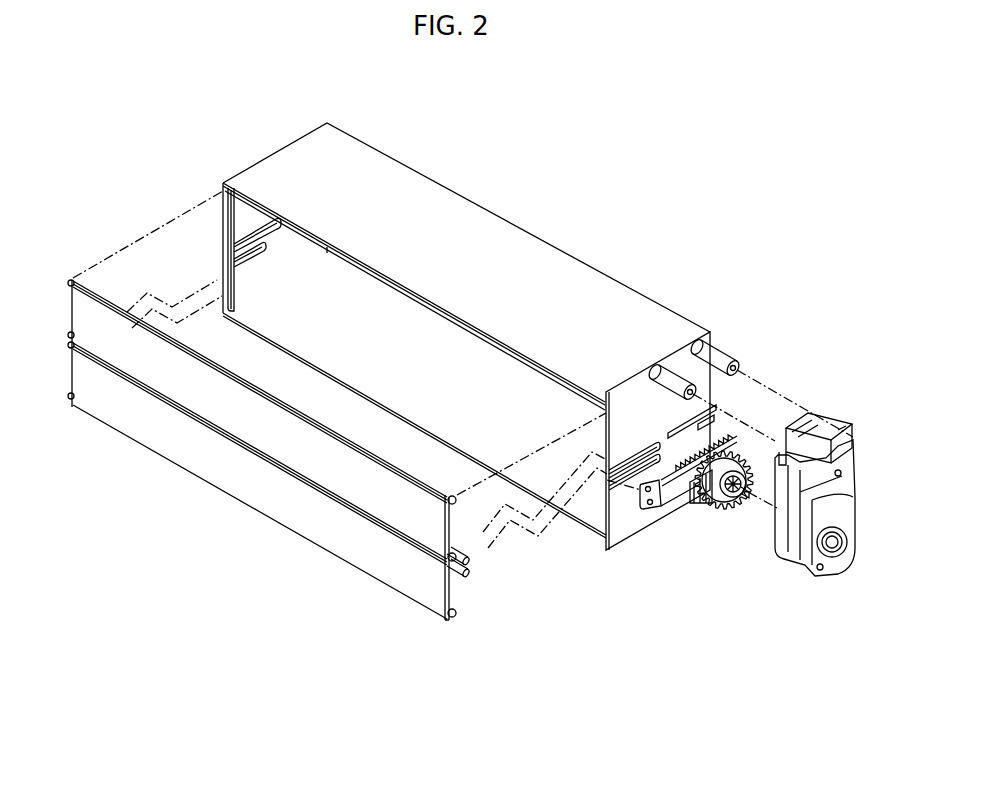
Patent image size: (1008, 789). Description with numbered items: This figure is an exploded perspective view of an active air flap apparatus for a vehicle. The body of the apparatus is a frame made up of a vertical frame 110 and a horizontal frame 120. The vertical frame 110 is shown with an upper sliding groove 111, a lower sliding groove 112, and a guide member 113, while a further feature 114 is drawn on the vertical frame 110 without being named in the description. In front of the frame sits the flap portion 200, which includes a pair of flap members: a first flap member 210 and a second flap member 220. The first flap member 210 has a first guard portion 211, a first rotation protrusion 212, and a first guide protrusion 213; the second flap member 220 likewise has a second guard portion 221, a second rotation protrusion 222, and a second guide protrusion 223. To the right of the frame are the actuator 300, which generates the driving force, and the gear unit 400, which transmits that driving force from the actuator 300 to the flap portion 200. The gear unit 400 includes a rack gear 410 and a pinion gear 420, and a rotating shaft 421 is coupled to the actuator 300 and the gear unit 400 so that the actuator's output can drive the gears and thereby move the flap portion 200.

The vertical frame 110 is at (489, 348).
The upper sliding groove 111 is at (645, 435).
The lower sliding groove 112 is at (630, 468).
The guide member 113 is at (242, 210).
The slot 114 is at (718, 417).
The horizontal frame 120 is at (273, 327).
The flap portion 200 is at (348, 444).
The first flap member 210 is at (348, 428).
The first guard portion 211 is at (417, 518).
The first rotation protrusion 212 is at (467, 553).
The first guide protrusion 213 is at (457, 502).
The second flap member 220 is at (269, 489).
The second guard portion 221 is at (393, 568).
The second rotation protrusion 222 is at (447, 562).
The second guide protrusion 223 is at (440, 615).
The actuator 300 is at (800, 596).
The gear unit 400 is at (699, 532).
The rack gear 410 is at (670, 487).
The pinion gear 420 is at (726, 522).
The rotating shaft 421 is at (708, 490).